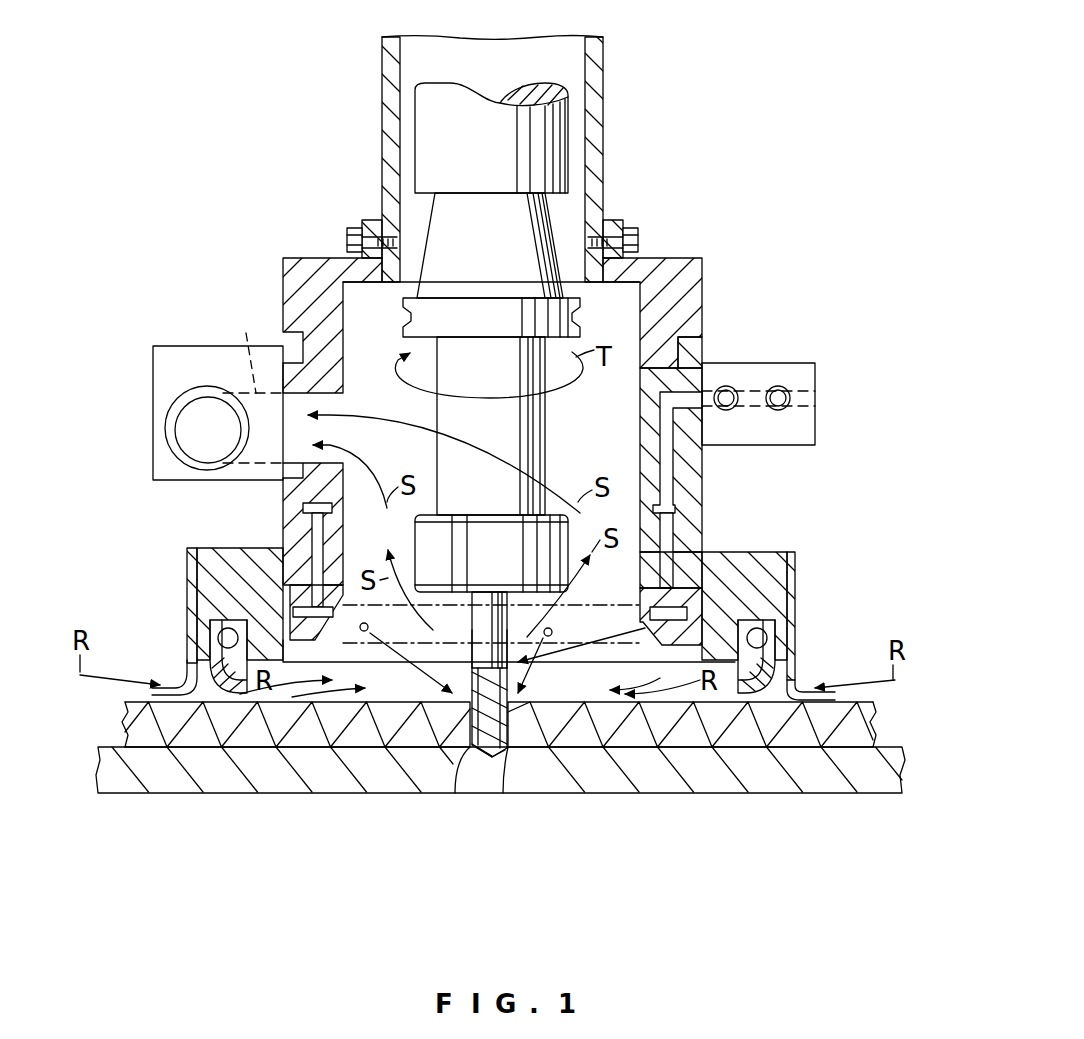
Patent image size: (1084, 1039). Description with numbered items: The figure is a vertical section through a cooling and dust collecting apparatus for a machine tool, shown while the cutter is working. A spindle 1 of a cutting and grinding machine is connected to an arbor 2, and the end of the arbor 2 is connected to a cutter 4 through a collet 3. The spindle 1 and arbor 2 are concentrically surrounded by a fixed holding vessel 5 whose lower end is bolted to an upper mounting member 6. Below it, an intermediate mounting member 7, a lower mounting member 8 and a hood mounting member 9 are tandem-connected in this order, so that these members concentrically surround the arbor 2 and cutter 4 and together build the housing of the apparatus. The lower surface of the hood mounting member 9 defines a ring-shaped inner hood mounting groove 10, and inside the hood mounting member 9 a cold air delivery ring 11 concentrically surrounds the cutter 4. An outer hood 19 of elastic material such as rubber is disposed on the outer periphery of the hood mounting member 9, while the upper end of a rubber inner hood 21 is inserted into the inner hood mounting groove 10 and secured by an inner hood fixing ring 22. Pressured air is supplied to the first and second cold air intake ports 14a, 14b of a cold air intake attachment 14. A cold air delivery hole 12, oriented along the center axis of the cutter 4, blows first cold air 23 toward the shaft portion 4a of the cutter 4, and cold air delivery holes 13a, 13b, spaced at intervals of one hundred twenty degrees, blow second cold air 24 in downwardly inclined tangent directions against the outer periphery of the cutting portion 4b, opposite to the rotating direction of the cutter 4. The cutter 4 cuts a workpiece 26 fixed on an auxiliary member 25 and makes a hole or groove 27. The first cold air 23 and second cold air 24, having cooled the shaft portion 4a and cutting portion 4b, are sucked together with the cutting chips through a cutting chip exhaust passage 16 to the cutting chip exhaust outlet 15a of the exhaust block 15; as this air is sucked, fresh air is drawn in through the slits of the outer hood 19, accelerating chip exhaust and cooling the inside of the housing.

The spindle 1 is at (418, 110).
The arbor 2 is at (437, 212).
The collet 3 is at (417, 535).
The cutter 4 is at (490, 600).
The shaft portion 4a is at (478, 642).
The cutting portion 4b is at (500, 762).
The fixed holding vessel 5 is at (603, 104).
The upper mounting member 6 is at (702, 280).
The intermediate mounting member 7 is at (697, 345).
The lower mounting member 8 is at (690, 497).
The hood mounting member 9 is at (760, 560).
The inner hood mounting groove 10 is at (212, 628).
The cold air delivery ring 11 is at (708, 607).
The cold air delivery hole 12 is at (650, 620).
The cold air delivery hole 13a is at (552, 632).
The cold air delivery hole 13b is at (368, 627).
The cold air intake attachment 14 is at (800, 370).
The first cold air intake port 14a is at (726, 410).
The second cold air intake port 14b is at (778, 410).
The suction block 15 is at (153, 382).
The cutting chip exhaust outlet 15a is at (185, 428).
The cutting chip exhaust passage 16 is at (241, 349).
The outer hood 19 is at (187, 560).
The inner hood 21 is at (790, 670).
The inner hood fixing ring 22 is at (190, 668).
The first cold air 23 is at (600, 668).
The second cold air 24 is at (467, 668).
The auxiliary member 25 is at (832, 778).
The workpiece 26 is at (865, 732).
The hole or groove 27 is at (458, 752).